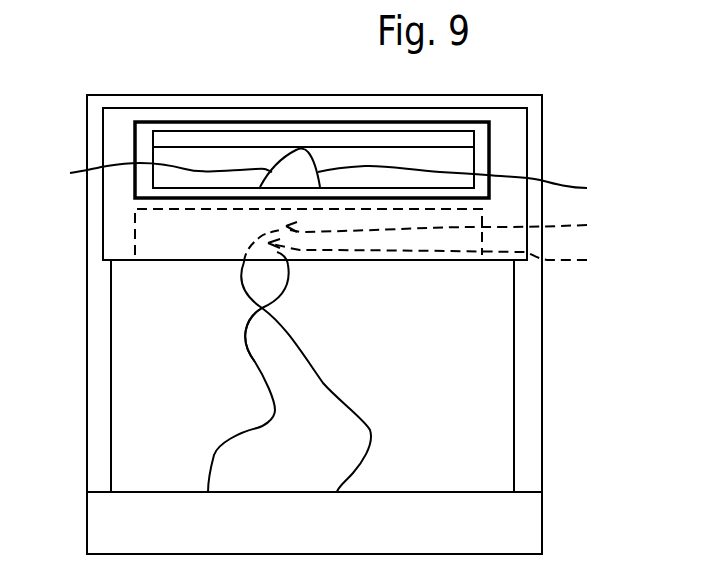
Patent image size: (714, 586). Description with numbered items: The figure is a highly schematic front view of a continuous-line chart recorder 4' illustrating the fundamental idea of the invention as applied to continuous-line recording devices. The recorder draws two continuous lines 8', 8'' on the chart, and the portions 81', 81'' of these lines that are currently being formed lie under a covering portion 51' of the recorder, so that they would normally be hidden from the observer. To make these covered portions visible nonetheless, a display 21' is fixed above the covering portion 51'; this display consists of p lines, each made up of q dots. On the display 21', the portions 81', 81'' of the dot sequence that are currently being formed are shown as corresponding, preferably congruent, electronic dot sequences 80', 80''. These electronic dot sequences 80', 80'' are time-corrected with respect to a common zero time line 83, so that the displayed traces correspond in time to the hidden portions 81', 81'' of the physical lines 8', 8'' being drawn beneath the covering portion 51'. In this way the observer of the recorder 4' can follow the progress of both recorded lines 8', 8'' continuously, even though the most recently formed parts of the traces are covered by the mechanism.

The housing 4' is at (354, 324).
The display 21' is at (391, 150).
The common zero time line 83 is at (460, 148).
The electronic dot sequence 80' is at (474, 186).
The electronic dot sequence 80'' is at (150, 165).
The covering portion 51' is at (254, 230).
The portion of line currently being formed 81'' is at (440, 236).
The portion of line currently being formed 81' is at (449, 257).
The line 8'' is at (318, 320).
The line 8' is at (209, 373).